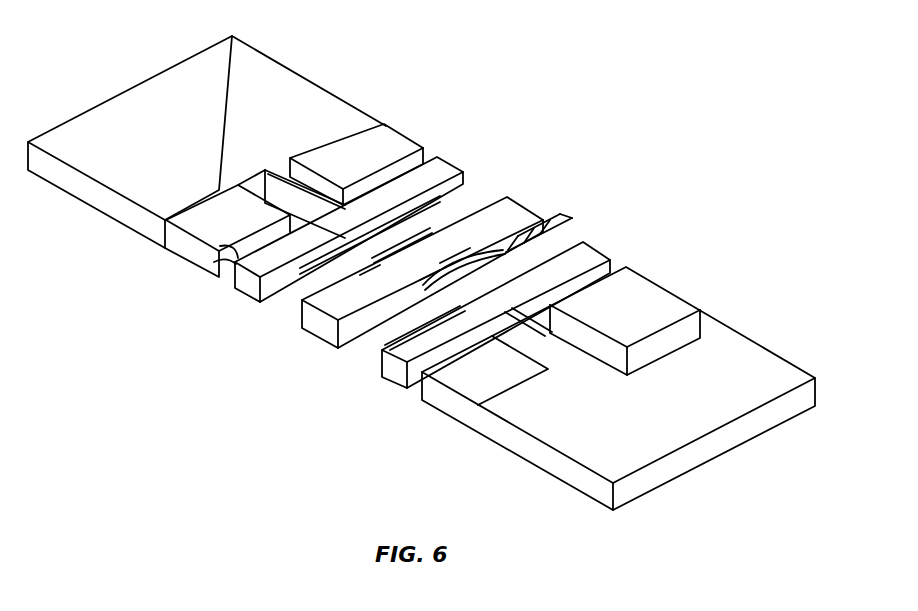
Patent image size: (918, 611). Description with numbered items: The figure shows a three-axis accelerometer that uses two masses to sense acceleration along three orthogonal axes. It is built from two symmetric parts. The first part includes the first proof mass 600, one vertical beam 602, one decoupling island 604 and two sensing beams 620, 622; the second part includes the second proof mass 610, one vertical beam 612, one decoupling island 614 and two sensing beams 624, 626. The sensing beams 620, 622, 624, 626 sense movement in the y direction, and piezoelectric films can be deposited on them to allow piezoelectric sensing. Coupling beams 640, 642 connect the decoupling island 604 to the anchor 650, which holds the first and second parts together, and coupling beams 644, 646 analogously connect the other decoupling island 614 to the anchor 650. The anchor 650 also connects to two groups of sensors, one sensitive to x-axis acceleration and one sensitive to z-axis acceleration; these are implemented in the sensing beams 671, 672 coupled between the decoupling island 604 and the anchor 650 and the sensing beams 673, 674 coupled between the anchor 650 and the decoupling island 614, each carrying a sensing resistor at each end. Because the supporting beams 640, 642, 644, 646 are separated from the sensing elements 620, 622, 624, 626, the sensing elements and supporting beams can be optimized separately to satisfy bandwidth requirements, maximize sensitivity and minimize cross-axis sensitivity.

The proof mass 1 600 is at (88, 196).
The vertical beam 602 is at (268, 176).
The decoupling island 604 is at (248, 286).
The proof mass 2 610 is at (752, 353).
The vertical beam 612 is at (560, 351).
The decoupling island 614 is at (398, 379).
The sensing beam 620 is at (425, 154).
The sensing beam 622 is at (218, 272).
The sensing beam 624 is at (605, 256).
The sensing beam 626 is at (433, 358).
The coupling beam 640 is at (473, 191).
The coupling beam 642 is at (303, 292).
The coupling beam 644 is at (553, 233).
The coupling beam 646 is at (397, 323).
The anchor 650 is at (528, 207).
The sensing beam 671 is at (378, 266).
The sensing beam 672 is at (403, 240).
The sensing beam 673 is at (548, 233).
The sensing beam 674 is at (430, 272).